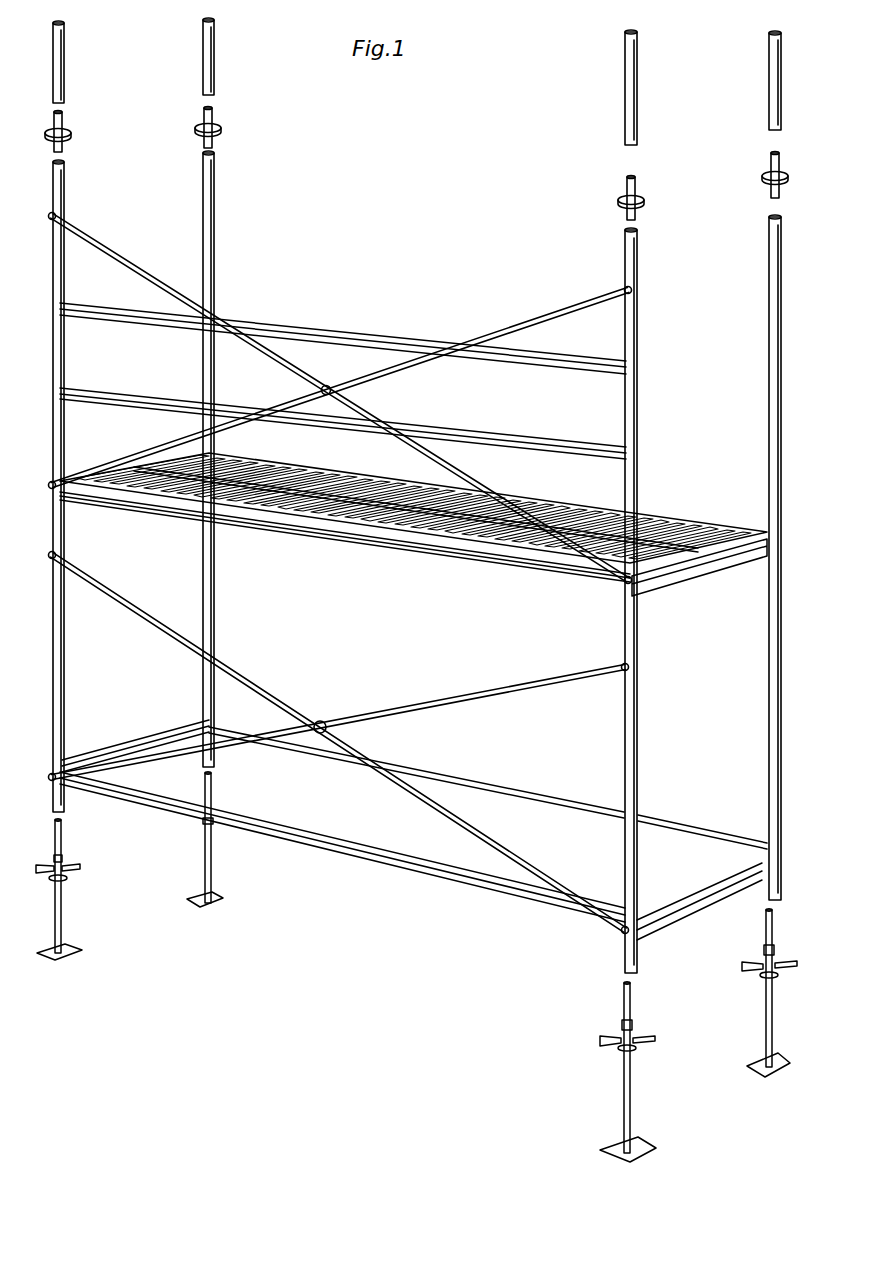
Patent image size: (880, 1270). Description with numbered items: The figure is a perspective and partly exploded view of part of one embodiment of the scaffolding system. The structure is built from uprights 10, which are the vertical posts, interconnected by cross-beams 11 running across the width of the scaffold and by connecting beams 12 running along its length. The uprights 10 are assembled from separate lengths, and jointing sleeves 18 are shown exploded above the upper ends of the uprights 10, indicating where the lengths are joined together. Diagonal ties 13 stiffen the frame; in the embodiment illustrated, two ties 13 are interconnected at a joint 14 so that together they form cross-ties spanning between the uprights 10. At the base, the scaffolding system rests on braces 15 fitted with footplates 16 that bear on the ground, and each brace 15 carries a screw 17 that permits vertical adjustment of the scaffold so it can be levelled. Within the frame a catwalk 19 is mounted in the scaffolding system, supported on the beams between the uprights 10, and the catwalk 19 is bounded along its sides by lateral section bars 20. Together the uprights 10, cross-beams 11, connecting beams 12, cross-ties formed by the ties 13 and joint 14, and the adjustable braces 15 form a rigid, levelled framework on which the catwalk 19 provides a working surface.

The upright 10 is at (417, 495).
The cross-beam 11 is at (412, 821).
The connecting beam 12 is at (413, 612).
The tie 13 is at (340, 573).
The joint 14 is at (322, 708).
The brace 15 is at (413, 962).
The footplate 16 is at (413, 1027).
The screw 17 is at (416, 949).
The jointing sleeve 18 is at (416, 164).
The catwalk 19 is at (414, 507).
The lateral section bar 20 is at (413, 524).